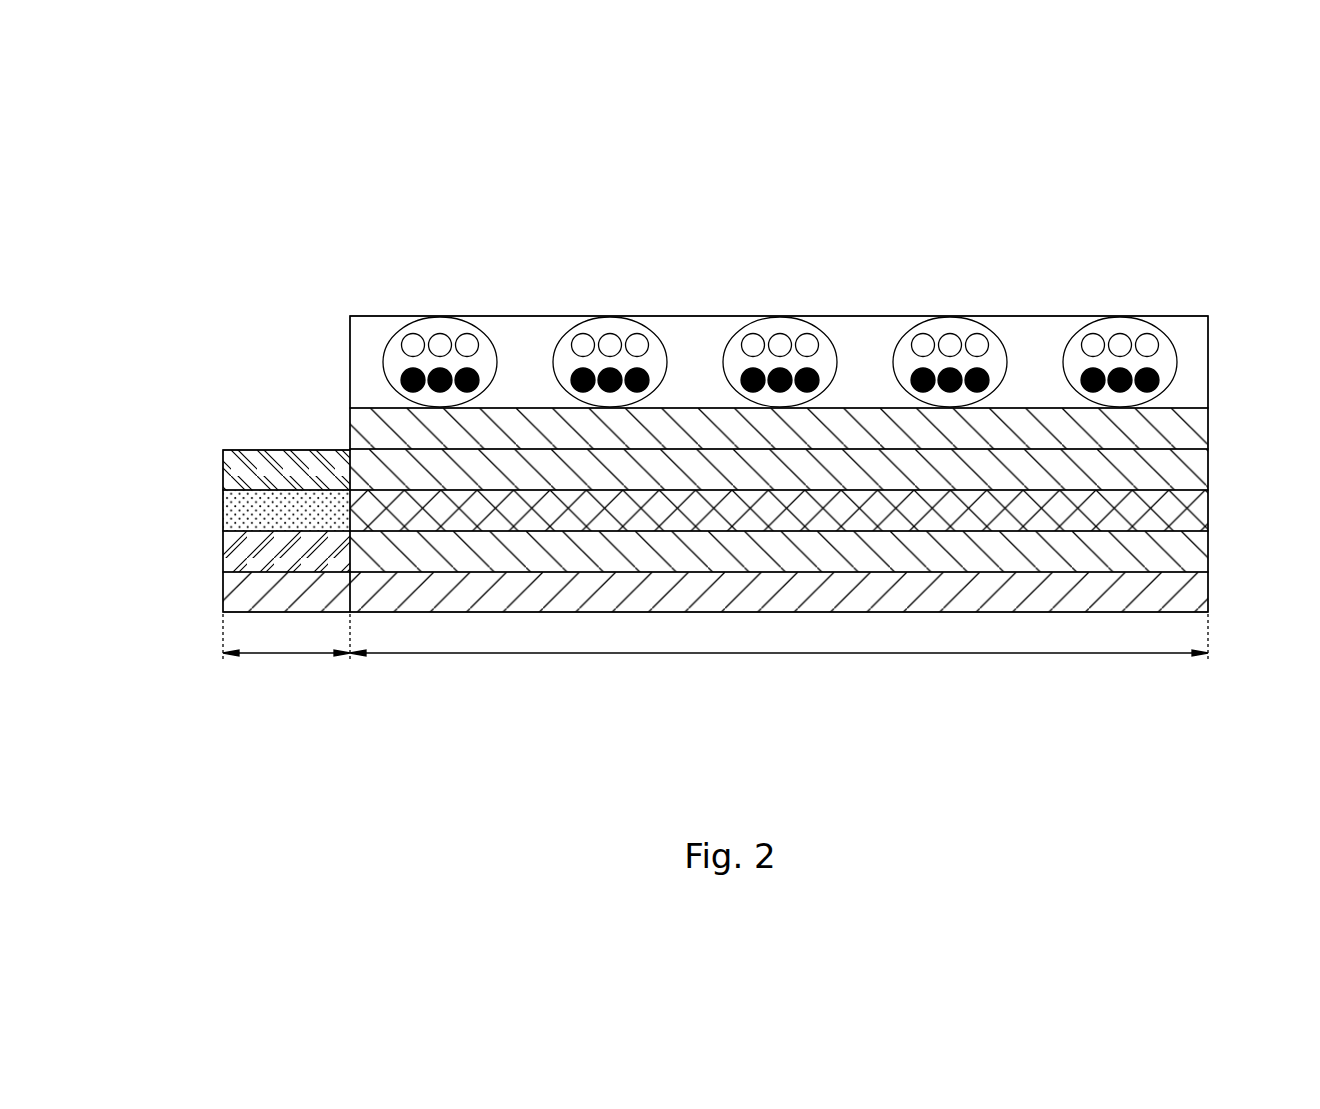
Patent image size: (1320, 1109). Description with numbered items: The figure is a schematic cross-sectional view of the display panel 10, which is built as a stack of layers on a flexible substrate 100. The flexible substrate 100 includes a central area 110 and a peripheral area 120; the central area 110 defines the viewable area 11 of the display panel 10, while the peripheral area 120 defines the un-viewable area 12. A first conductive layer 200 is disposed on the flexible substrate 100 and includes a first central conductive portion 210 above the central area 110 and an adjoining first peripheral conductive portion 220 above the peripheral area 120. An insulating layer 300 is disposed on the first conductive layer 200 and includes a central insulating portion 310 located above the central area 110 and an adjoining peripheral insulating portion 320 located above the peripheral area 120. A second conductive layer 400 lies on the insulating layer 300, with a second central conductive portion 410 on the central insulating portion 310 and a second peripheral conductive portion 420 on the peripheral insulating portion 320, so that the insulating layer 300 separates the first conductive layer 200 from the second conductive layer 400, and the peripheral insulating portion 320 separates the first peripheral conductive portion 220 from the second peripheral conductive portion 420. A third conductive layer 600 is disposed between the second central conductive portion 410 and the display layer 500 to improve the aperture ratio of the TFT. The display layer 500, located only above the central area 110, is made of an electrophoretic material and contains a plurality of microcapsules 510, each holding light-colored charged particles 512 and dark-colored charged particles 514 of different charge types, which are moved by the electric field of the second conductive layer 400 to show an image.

The display panel 10 is at (93, 236).
The viewable area 11 is at (973, 622).
The un-viewable area 12 is at (272, 620).
The flexible substrate 100 is at (715, 677).
The central area 110 is at (779, 656).
The peripheral area 120 is at (286, 651).
The first conductive layer 200 is at (702, 540).
The first central conductive portion 210 is at (1185, 551).
The first peripheral conductive portion 220 is at (262, 552).
The insulating layer 300 is at (702, 500).
The central insulating portion 310 is at (1185, 511).
The peripheral insulating portion 320 is at (262, 512).
The second conductive layer 400 is at (702, 458).
The second central conductive portion 410 is at (1185, 471).
The second peripheral conductive portion 420 is at (262, 472).
The display layer 500 is at (779, 314).
The microcapsule 510 is at (470, 314).
The light-colored charged particle 512 is at (478, 345).
The dark-colored charged particle 514 is at (480, 373).
The third conductive layer 600 is at (1185, 433).